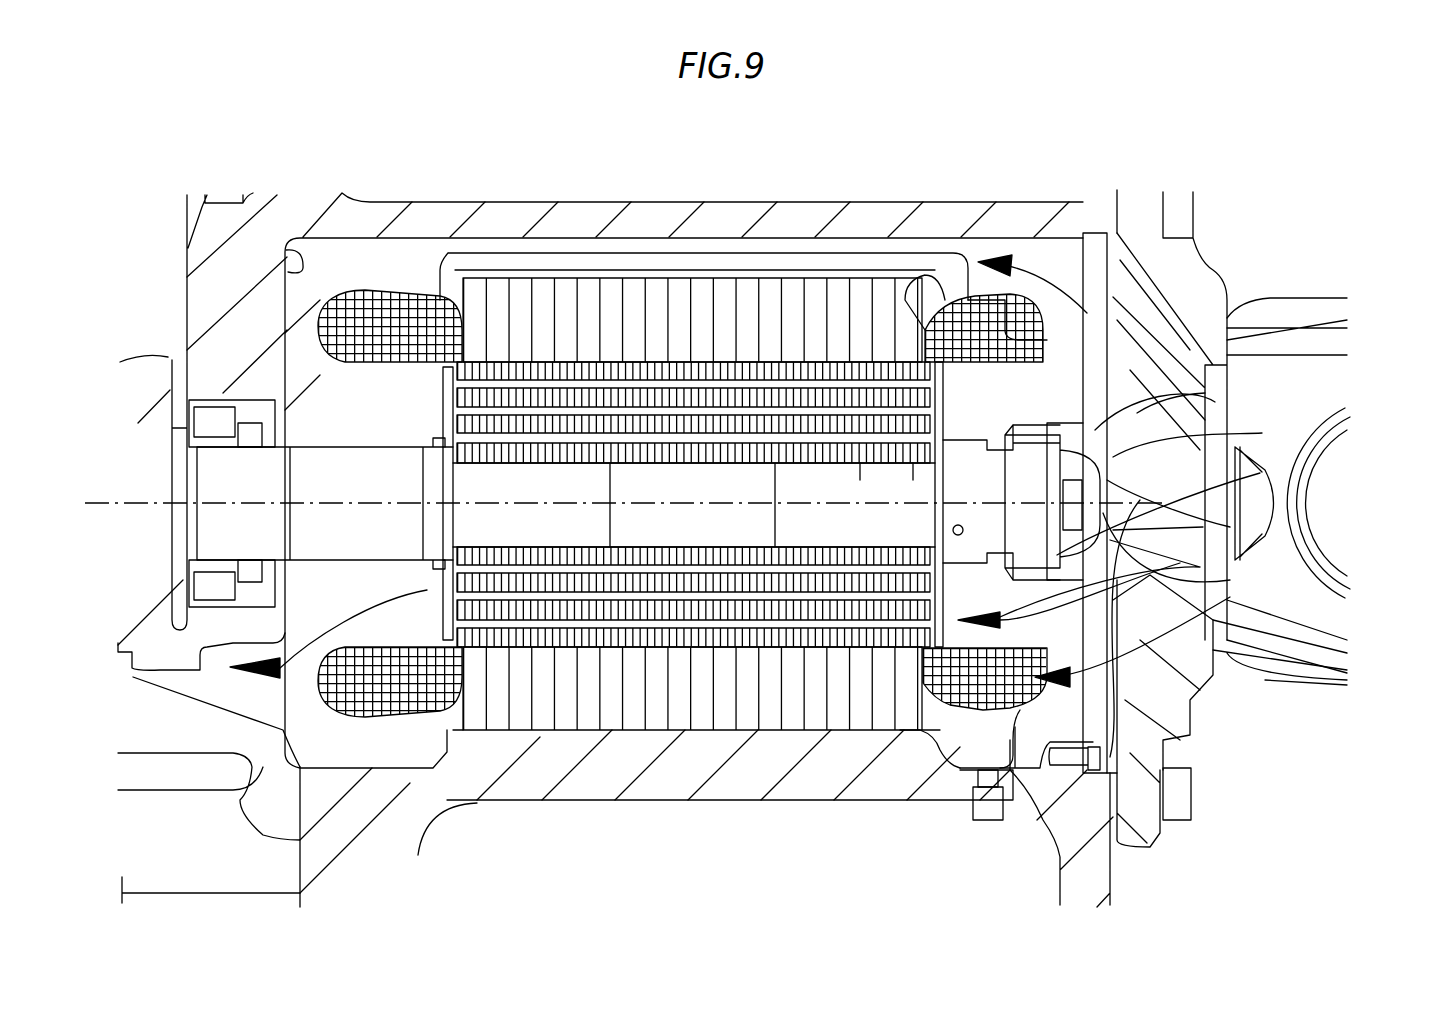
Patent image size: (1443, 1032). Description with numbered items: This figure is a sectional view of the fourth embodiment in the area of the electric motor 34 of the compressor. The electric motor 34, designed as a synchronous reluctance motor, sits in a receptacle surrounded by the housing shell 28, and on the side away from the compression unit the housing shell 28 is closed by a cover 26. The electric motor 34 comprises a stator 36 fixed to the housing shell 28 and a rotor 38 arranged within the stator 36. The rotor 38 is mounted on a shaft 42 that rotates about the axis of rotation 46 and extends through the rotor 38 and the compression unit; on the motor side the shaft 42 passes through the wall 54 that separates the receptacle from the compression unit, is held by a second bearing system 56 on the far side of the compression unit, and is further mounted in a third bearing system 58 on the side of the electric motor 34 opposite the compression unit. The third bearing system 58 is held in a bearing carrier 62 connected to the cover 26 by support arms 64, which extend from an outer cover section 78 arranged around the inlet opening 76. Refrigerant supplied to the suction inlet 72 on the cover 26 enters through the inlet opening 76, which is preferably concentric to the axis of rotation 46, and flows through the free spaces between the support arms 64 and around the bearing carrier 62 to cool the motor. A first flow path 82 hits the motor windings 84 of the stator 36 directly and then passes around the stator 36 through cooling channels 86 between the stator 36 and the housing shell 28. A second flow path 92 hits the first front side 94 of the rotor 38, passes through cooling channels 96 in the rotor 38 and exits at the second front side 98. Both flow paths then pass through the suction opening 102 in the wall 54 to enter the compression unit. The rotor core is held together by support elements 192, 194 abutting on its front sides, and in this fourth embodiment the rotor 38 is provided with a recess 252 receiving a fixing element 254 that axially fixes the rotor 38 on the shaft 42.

The cover 26 is at (1170, 323).
The housing shell 28 is at (735, 218).
The electric motor 34 is at (796, 755).
The stator 36 is at (685, 697).
The rotor 38 is at (775, 395).
The shaft 42 is at (360, 480).
The axis of rotation 46 is at (122, 500).
The wall 54 is at (224, 293).
The second bearing system 56 is at (220, 633).
The third bearing system 58 is at (1182, 505).
The bearing carrier 62 is at (1085, 315).
The support arms 64 is at (1262, 433).
The suction inlet 72 is at (1315, 632).
The inlet opening 76 is at (1182, 585).
The outer cover section 78 is at (1197, 692).
The first flow path 82 is at (1030, 300).
The motor windings 84 is at (1035, 690).
The cooling channels 86 is at (853, 262).
The second flow path 92 is at (1023, 627).
The first front side 94 is at (915, 700).
The cooling channels 96 is at (600, 385).
The second front side 98 is at (440, 700).
The suction opening 102 is at (238, 688).
The support element 192 is at (960, 395).
The support element 194 is at (425, 405).
The recess 252 is at (878, 465).
The fixing element 254 is at (916, 465).